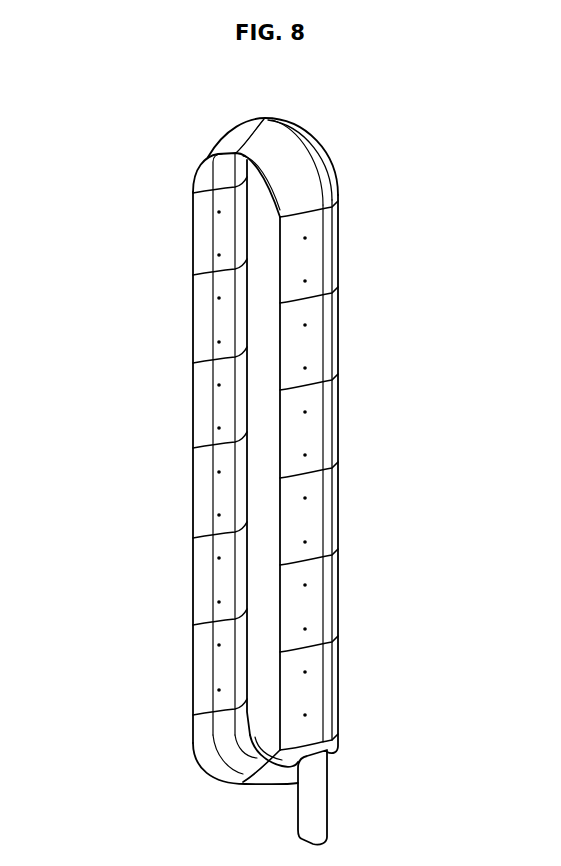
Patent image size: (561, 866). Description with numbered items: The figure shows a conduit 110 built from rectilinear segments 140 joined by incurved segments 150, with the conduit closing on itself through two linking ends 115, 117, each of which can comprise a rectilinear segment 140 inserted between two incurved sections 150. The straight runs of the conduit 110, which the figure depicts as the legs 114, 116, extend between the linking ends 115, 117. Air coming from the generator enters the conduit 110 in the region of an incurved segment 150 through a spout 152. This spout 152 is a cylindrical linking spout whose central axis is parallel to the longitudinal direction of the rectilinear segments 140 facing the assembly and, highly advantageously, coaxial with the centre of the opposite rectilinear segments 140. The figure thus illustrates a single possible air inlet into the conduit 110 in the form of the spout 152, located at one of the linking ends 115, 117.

The conduit 110 is at (128, 306).
The first leg 114 is at (170, 480).
The linking end 115 is at (273, 104).
The second leg 116 is at (377, 424).
The linking end 117 is at (223, 792).
The rectilinear segment 140 is at (219, 232).
The incurved segment 150 is at (236, 138).
The spout 152 is at (312, 797).